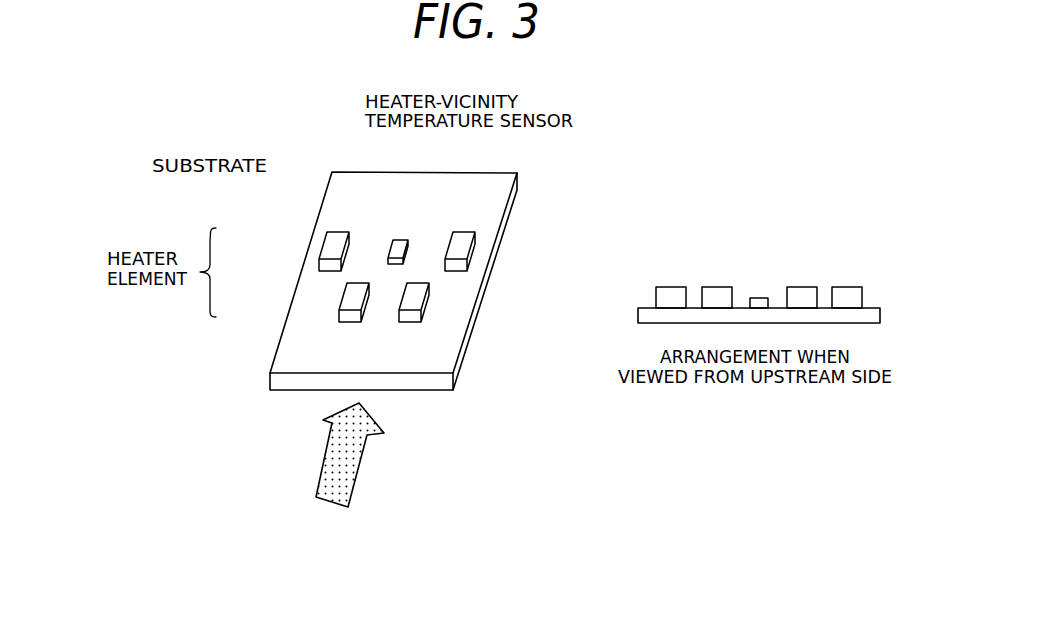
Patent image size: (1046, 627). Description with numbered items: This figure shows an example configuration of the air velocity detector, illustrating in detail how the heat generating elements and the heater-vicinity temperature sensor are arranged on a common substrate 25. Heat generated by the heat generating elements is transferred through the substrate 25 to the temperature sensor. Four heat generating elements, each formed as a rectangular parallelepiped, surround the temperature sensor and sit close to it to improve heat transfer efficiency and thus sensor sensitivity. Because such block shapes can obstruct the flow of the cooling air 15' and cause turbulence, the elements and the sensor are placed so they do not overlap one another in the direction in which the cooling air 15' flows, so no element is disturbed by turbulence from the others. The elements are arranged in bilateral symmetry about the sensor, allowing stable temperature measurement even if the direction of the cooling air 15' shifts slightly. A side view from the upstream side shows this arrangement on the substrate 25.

The substrate 25 is at (346, 193).
The cooling air 15' is at (315, 455).